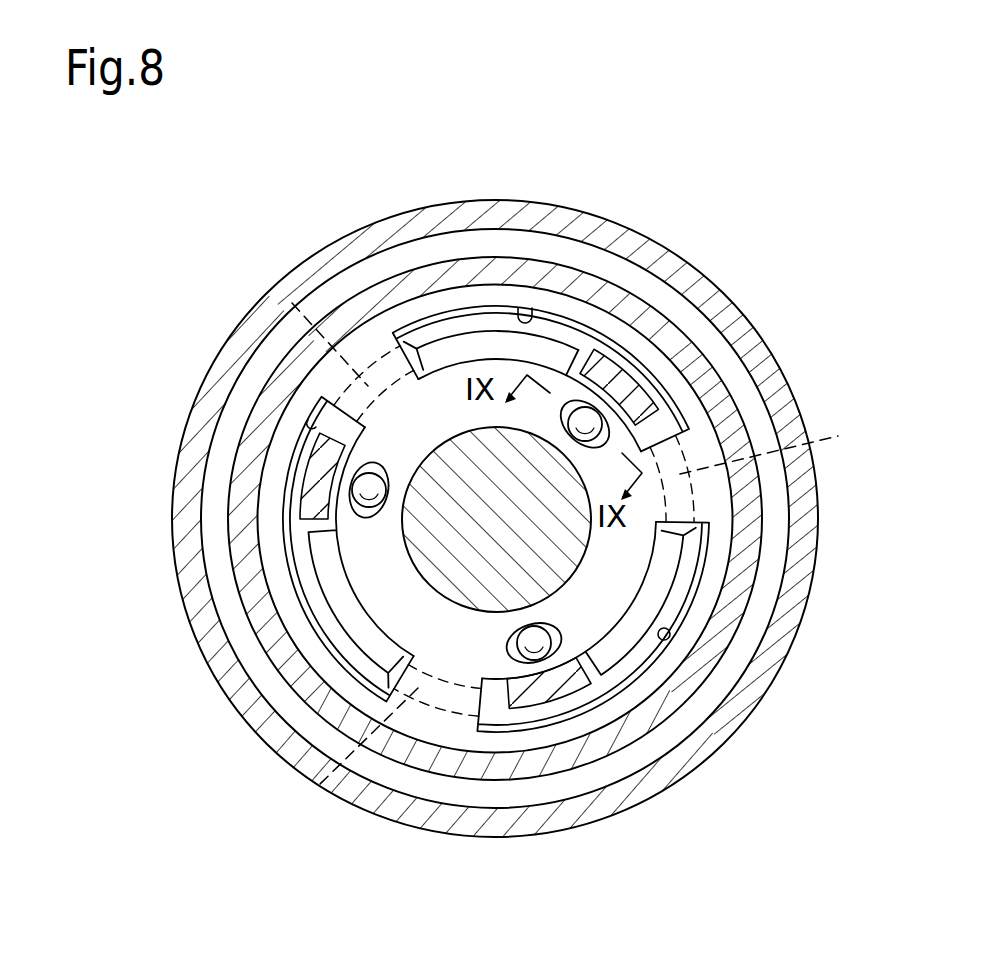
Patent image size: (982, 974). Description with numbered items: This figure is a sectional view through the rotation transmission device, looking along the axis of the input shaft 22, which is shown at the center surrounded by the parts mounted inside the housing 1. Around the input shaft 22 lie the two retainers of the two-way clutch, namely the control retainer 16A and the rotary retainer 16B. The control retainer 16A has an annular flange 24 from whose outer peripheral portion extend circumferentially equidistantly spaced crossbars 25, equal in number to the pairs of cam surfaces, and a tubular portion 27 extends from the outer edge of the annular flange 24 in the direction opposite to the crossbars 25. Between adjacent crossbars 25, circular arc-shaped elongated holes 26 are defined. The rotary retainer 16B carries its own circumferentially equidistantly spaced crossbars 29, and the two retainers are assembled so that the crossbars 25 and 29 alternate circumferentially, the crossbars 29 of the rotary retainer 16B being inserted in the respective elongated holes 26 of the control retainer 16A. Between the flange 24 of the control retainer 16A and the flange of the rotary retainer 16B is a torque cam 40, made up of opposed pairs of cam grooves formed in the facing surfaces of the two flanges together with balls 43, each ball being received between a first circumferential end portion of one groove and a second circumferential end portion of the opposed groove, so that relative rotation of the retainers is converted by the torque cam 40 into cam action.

The housing 1 is at (340, 250).
The control retainer 16A is at (226, 549).
The rotary retainer 16B is at (290, 497).
The input shaft 22 is at (447, 567).
The annular flange 24 is at (360, 572).
The crossbars 25 is at (288, 298).
The elongated holes 26 is at (526, 306).
The tubular portion 27 is at (455, 268).
The crossbars 29 is at (297, 471).
The torque cam 40 is at (578, 388).
The balls 43 is at (655, 378).